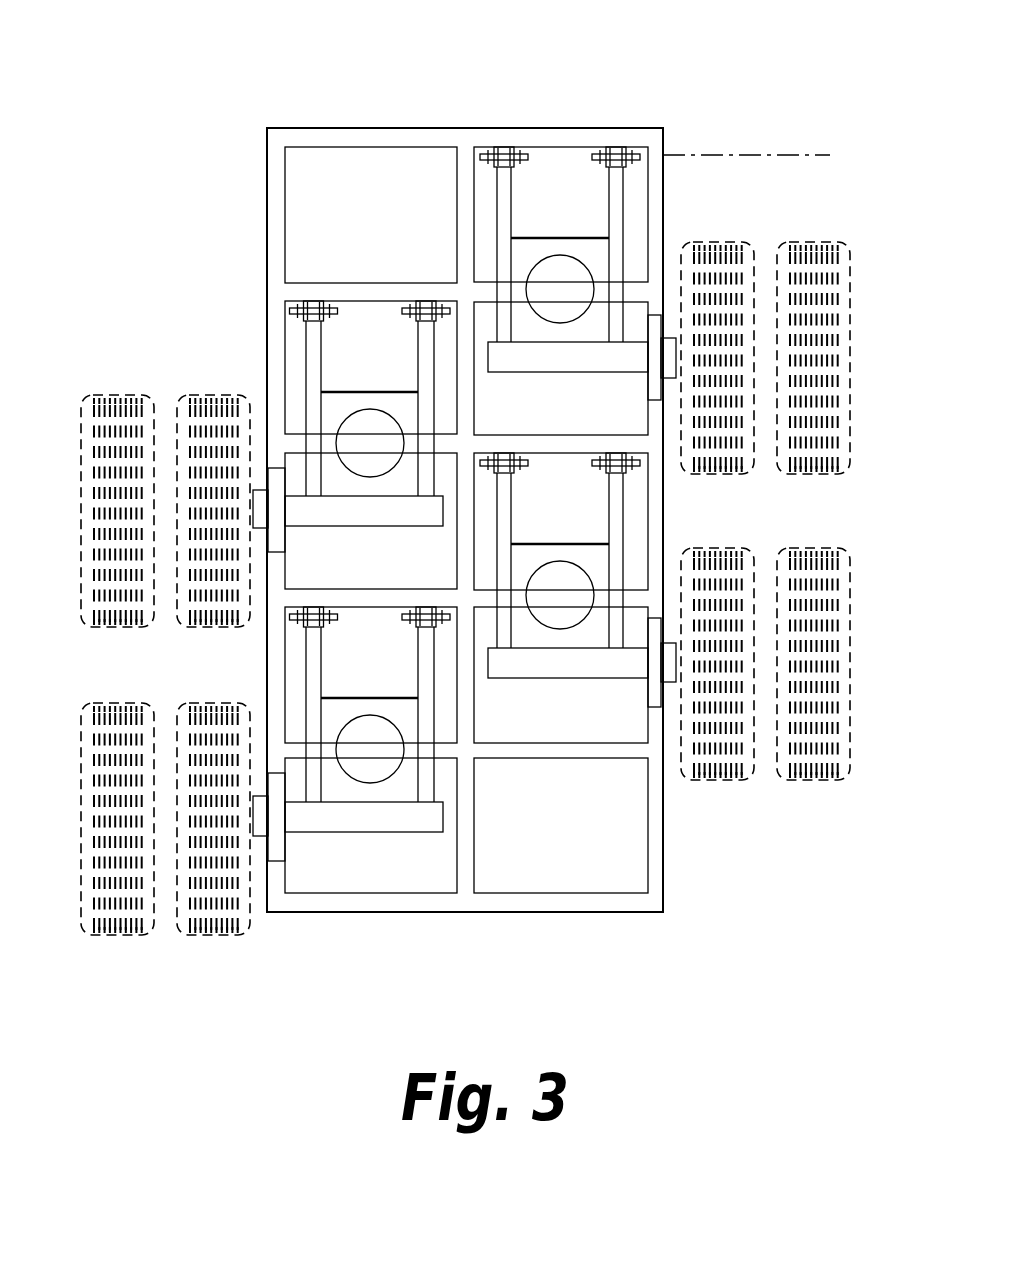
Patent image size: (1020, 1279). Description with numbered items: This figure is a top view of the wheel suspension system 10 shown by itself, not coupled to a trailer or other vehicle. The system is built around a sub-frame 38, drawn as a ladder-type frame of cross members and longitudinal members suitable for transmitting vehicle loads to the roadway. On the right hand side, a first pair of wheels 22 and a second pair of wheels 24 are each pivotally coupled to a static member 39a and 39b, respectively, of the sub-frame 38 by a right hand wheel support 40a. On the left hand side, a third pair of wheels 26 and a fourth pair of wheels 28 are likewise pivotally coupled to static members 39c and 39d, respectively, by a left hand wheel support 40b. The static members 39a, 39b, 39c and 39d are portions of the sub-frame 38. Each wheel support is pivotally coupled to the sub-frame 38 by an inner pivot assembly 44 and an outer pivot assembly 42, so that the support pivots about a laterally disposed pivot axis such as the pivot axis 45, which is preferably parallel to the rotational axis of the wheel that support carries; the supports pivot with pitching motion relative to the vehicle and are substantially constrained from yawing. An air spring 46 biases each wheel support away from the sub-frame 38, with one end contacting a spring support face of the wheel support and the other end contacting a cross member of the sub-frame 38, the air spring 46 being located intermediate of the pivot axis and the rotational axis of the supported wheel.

The wheel suspension system 10 is at (210, 118).
The first pair of wheels 22 is at (800, 245).
The second pair of wheels 24 is at (823, 777).
The third pair of wheels 26 is at (215, 420).
The fourth pair of wheels 28 is at (202, 902).
The sub-frame 38 is at (468, 900).
The static member 39a is at (563, 135).
The static member 39b is at (508, 445).
The static member 39c is at (336, 287).
The static member 39d is at (372, 597).
The right hand wheel support 40a is at (620, 180).
The left hand wheel support 40b is at (313, 357).
The outer pivot assembly 42 is at (620, 145).
The inner pivot assembly 44 is at (505, 147).
The pivot axis 45 is at (812, 155).
The air spring 46 is at (575, 273).